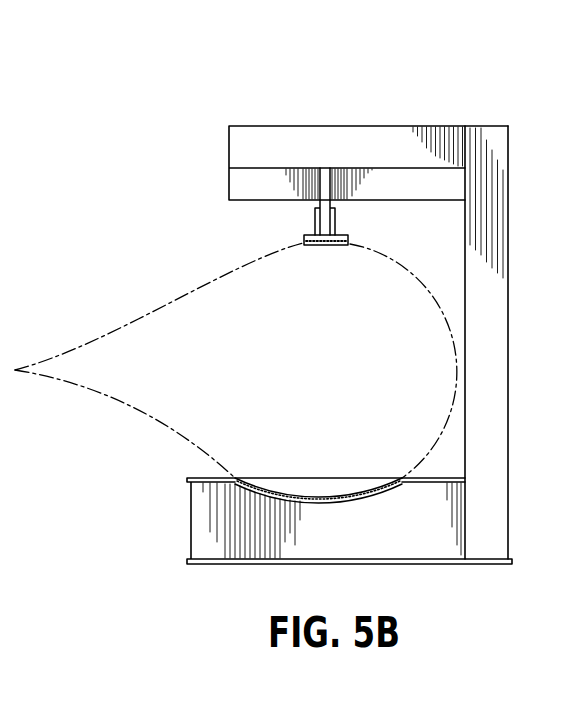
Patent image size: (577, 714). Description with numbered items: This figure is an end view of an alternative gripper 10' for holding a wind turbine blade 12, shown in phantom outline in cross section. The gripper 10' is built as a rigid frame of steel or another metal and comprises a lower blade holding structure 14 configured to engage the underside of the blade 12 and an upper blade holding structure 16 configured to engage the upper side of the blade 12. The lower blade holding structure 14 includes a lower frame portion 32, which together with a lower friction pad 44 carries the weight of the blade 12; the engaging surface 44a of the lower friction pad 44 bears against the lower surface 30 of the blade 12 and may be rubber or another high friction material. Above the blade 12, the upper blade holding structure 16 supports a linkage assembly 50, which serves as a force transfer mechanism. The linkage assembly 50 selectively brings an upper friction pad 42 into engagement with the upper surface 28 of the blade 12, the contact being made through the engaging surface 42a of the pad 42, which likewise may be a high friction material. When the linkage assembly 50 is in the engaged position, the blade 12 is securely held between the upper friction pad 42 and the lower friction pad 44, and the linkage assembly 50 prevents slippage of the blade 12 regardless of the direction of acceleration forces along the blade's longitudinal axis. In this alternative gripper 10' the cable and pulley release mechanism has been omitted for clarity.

The alternative gripper 10' is at (378, 311).
The wind turbine blade 12 is at (178, 297).
The lower blade holding structure 14 is at (507, 533).
The upper blade holding structure 16 is at (377, 130).
The upper surface 28 is at (300, 242).
The lower surface 30 is at (250, 495).
The lower frame portion 32 is at (435, 552).
The upper friction pad 42 is at (351, 240).
The engaging surface of upper friction pad 42a is at (317, 248).
The lower friction pad 44 is at (309, 494).
The engaging surface of lower friction pad 44a is at (313, 497).
The linkage assembly 50 is at (314, 213).